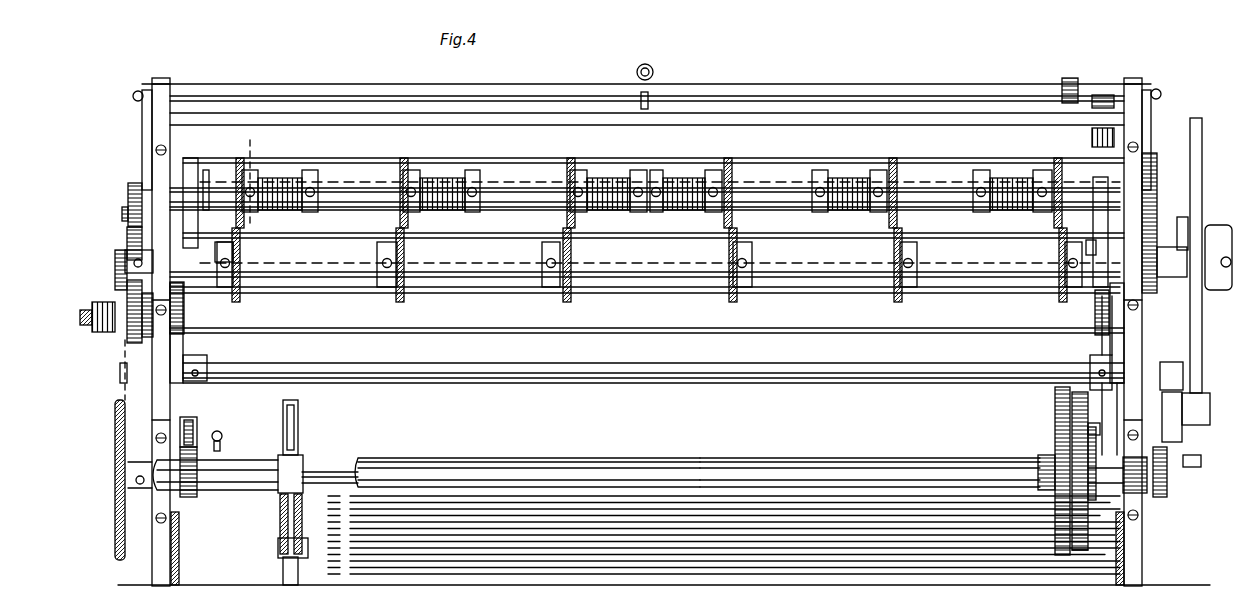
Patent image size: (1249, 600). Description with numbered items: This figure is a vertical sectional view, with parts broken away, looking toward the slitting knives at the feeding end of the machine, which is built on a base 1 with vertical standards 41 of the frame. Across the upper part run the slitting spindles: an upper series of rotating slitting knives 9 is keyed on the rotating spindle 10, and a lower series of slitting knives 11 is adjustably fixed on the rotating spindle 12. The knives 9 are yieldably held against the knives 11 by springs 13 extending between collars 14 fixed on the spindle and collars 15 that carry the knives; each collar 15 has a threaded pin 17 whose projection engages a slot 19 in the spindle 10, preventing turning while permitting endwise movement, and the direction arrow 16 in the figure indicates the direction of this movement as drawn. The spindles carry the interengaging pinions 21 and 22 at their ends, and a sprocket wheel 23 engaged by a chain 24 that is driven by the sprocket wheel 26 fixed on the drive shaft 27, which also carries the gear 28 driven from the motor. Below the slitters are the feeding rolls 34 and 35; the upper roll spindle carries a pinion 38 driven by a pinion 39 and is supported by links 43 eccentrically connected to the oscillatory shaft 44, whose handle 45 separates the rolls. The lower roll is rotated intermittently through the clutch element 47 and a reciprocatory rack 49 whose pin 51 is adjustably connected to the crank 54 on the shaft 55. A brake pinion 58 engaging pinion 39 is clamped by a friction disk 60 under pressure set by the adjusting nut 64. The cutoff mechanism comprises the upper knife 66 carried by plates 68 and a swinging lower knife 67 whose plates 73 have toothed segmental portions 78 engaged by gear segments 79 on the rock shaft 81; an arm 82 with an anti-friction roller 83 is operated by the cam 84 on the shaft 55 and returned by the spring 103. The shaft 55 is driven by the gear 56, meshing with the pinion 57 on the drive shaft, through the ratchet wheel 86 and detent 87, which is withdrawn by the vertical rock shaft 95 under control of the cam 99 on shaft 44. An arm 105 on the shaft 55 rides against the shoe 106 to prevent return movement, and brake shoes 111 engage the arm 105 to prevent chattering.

The base 1 is at (180, 560).
The upper slitting knives 9 is at (712, 168).
The upper spindle 10 is at (760, 185).
The lower slitting knives 11 is at (405, 298).
The lower spindle 12 is at (710, 285).
The springs 13 is at (622, 178).
The collars 14 is at (650, 172).
The knife collars 15 is at (872, 212).
The direction arrow 16 is at (293, 140).
The threaded pin 17 is at (980, 212).
The slot 19 is at (935, 185).
The pinion 21 is at (1154, 160).
The pinion 22 is at (1160, 227).
The sprocket wheel 23 is at (117, 254).
The chain 24 is at (112, 370).
The sprocket wheel 26 is at (115, 430).
The drive shaft 27 is at (822, 488).
The gear 28 is at (1058, 530).
The upper feeding roll 34 is at (519, 221).
The lower feeding roll 35 is at (515, 288).
The pinion 38 is at (128, 188).
The pinion 39 is at (125, 222).
The vertical standards 41 is at (160, 362).
The links 43 is at (150, 114).
The oscillatory shaft 44 is at (912, 85).
The handle 45 is at (655, 74).
The clutch element 47 is at (1216, 228).
The reciprocatory rack 49 is at (1200, 198).
The pin 51 is at (1200, 432).
The crank 54 is at (1190, 462).
The crank shaft 55 is at (362, 462).
The gear 56 is at (1090, 550).
The pinion 57 is at (1060, 490).
The brake pinion 58 is at (125, 350).
The friction disk 60 is at (1095, 218).
The adjusting nut 64 is at (94, 304).
The upper knife 66 is at (520, 162).
The lower knife 67 is at (776, 326).
The plates 68 is at (198, 166).
The plates 73 is at (178, 167).
The toothed segmental portions 78 is at (185, 290).
The gear segments 79 is at (185, 335).
The rock shaft 81 is at (442, 378).
The arm 82 is at (200, 418).
The anti-friction roller 83 is at (203, 428).
The cam 84 is at (200, 492).
The ratchet wheel 86 is at (1093, 500).
The detent 87 is at (1092, 432).
The vertical rock shaft 95 is at (1100, 346).
The cam 99 is at (1070, 80).
The spring 103 is at (230, 440).
The arm 105 is at (303, 442).
The shoe 106 is at (298, 412).
The brake shoes 111 is at (280, 532).